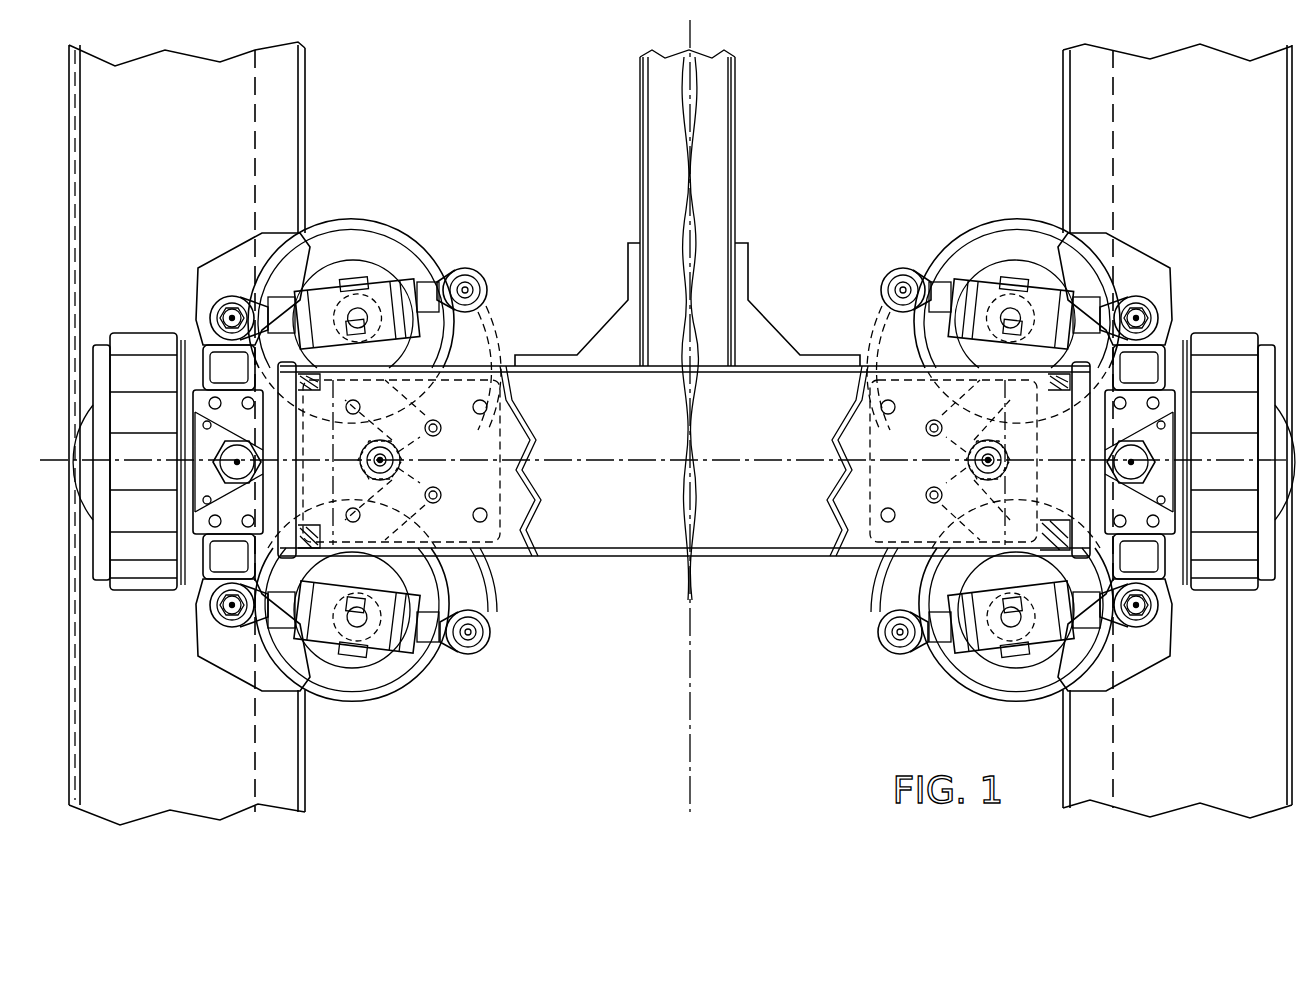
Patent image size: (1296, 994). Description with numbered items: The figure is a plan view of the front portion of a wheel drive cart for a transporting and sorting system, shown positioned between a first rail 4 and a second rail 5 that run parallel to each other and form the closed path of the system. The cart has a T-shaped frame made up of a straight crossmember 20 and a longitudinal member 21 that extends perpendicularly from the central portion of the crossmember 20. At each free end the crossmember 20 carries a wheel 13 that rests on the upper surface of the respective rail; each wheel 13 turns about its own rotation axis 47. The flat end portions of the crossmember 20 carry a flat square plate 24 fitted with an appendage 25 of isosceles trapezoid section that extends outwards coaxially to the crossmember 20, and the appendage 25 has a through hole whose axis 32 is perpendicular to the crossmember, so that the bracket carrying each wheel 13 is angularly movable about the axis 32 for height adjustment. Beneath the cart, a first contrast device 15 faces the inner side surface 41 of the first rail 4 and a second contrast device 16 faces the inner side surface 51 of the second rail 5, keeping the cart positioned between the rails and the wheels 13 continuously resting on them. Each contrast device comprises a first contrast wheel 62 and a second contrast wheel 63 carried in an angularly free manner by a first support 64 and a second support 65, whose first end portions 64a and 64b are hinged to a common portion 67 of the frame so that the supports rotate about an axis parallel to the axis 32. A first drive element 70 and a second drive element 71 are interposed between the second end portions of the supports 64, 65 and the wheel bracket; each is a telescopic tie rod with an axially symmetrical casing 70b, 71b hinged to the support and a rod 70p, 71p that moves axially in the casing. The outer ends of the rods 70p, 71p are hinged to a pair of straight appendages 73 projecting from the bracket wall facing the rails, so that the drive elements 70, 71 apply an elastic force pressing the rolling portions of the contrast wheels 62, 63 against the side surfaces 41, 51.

The first rail 4 is at (1052, 103).
The second rail 5 is at (318, 92).
The wheel 13 is at (140, 592).
The first contrast device 15 is at (972, 195).
The second contrast device 16 is at (415, 212).
The crossmember 20 is at (613, 513).
The longitudinal member 21 is at (712, 85).
The flat square plate 24 is at (288, 455).
The appendage 25 is at (233, 417).
The axis 32 is at (196, 476).
The inner side surface 41 is at (1062, 160).
The rotation axis 47 is at (152, 458).
The inner side surface 51 is at (307, 188).
The first contrast wheel 62 is at (403, 662).
The second contrast wheel 63 is at (382, 247).
The first support 64 is at (502, 582).
The first end portion 64a is at (442, 493).
The first end portion 64b is at (444, 428).
The second support 65 is at (502, 304).
The common portion 67 is at (403, 460).
The first drive element 70 is at (338, 657).
The axially symmetrical casing 70b is at (1013, 680).
The rod 70p is at (228, 624).
The second drive element 71 is at (350, 252).
The axially symmetrical casing 71b is at (1000, 277).
The rod 71p is at (232, 296).
The straight appendage 73 is at (210, 330).